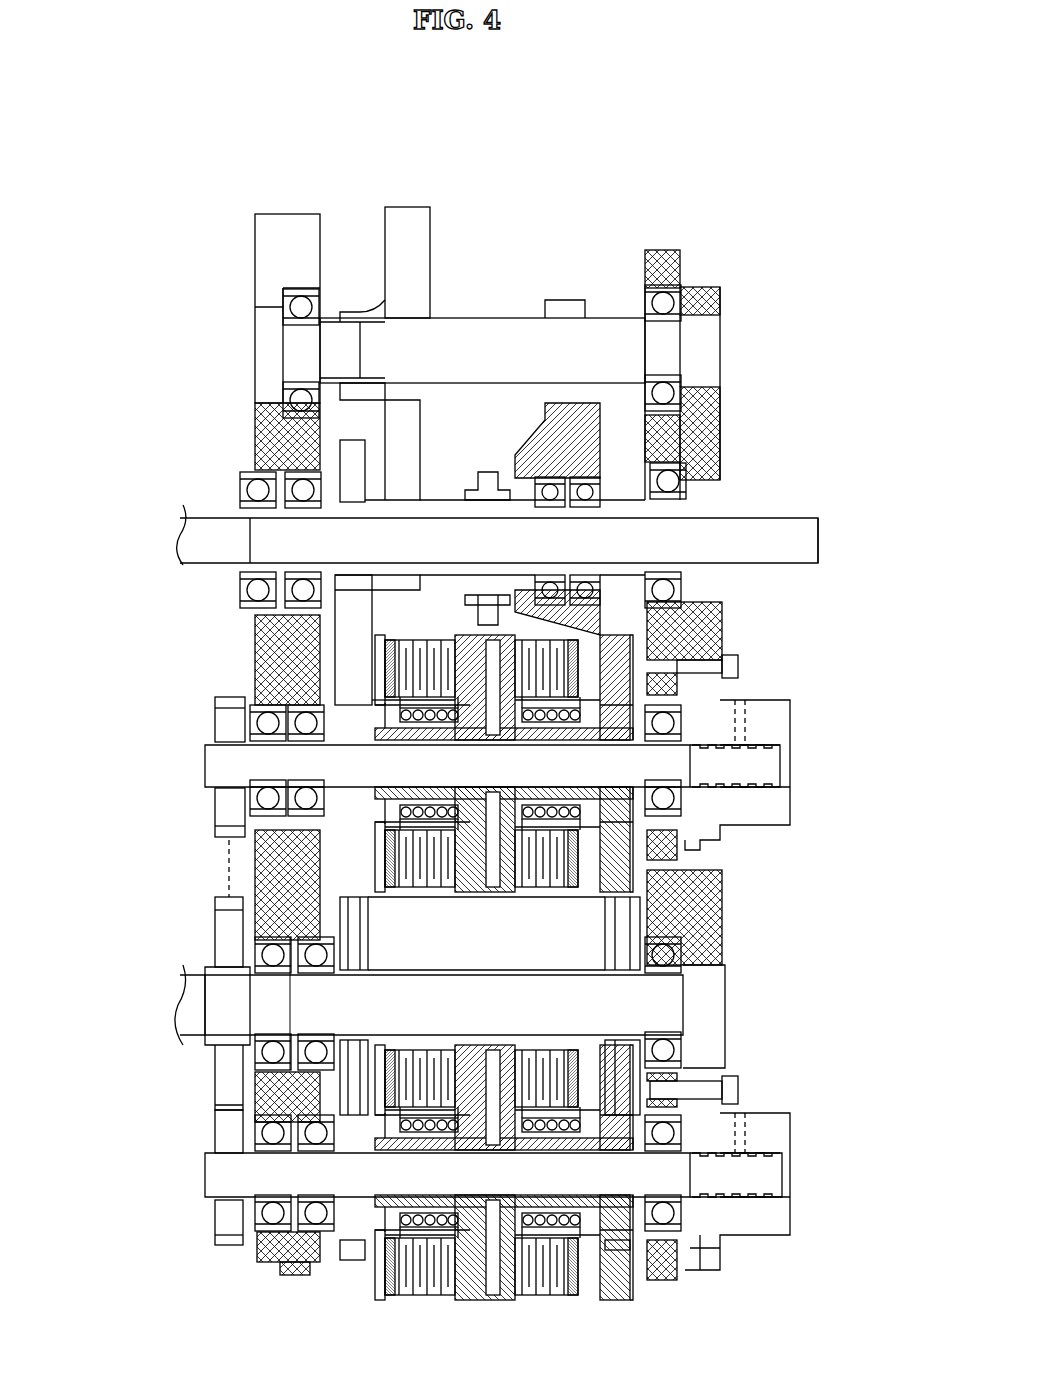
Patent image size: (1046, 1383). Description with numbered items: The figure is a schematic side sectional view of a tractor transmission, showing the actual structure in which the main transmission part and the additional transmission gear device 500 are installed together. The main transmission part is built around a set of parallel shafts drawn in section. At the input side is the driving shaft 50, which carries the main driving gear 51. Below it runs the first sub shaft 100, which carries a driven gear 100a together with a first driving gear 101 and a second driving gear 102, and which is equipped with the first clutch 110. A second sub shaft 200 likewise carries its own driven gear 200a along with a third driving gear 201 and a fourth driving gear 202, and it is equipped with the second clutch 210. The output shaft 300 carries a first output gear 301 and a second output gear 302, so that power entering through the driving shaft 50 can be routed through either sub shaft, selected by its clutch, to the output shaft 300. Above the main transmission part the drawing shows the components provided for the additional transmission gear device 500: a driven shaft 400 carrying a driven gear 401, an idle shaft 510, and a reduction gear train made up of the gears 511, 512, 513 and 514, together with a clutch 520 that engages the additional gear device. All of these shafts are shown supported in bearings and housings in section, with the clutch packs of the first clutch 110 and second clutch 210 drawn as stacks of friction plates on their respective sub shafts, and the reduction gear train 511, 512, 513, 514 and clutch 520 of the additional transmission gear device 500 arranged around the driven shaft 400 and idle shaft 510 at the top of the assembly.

The driving shaft 50 is at (205, 990).
The main driving gear 51 is at (225, 920).
The first sub shaft 100 is at (215, 1168).
The driven gear 100a is at (230, 1248).
The first driving gear 101 is at (618, 1250).
The second driving gear 102 is at (352, 1262).
The first clutch 110 is at (500, 1300).
The second sub shaft 200 is at (210, 762).
The driven gear 200a is at (230, 697).
The third driving gear 201 is at (722, 640).
The fourth driving gear 202 is at (372, 608).
The second clutch 210 is at (490, 895).
The output shaft 300 is at (632, 1005).
The first output gear 301 is at (623, 920).
The second output gear 302 is at (365, 932).
The driven shaft 400 is at (765, 522).
The driven gear 401 is at (352, 458).
The additional transmission gear device 500 is at (487, 312).
The idle shaft 510 is at (488, 318).
The reduction gear train gear 511 is at (420, 500).
The reduction gear train gear 512 is at (418, 227).
The reduction gear train gear 513 is at (565, 300).
The reduction gear train gear 514 is at (582, 420).
The clutch 520 is at (485, 470).